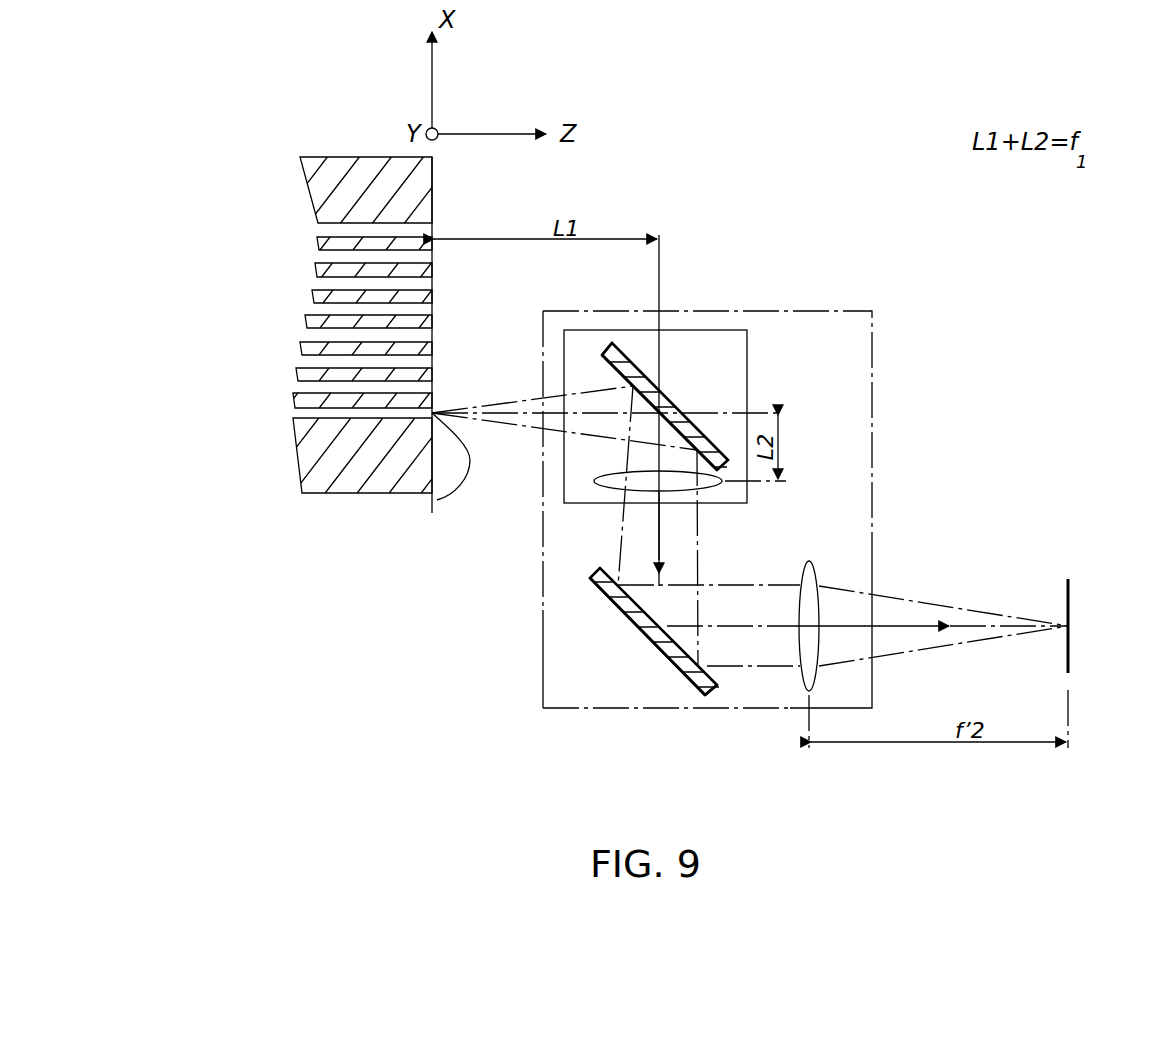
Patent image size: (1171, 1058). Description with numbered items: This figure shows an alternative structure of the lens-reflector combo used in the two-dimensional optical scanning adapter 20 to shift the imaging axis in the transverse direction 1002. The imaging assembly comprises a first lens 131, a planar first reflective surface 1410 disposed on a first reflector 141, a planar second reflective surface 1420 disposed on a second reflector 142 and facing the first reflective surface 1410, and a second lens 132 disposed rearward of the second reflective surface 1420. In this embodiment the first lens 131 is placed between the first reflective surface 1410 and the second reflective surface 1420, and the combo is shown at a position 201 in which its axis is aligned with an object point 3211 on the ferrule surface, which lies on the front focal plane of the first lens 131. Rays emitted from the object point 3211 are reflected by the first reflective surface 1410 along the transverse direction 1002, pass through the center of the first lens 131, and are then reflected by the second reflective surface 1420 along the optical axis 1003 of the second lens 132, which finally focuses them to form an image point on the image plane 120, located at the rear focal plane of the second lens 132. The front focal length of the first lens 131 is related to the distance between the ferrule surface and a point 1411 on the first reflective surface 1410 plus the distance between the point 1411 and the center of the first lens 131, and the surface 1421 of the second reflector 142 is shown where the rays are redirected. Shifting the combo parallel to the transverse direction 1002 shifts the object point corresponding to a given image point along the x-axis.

The object point 3211 is at (437, 500).
The optical scanning adapter 20 is at (543, 667).
The first position of lens-reflector combo 201 is at (718, 331).
The first reflector 141 is at (640, 383).
The first reflective surface 1410 is at (602, 356).
The point 1411 is at (657, 413).
The first lens 131 is at (630, 492).
The second reflector 142 is at (647, 614).
The second reflective surface 1420 is at (717, 675).
The reflecting surface of second mirror 1421 is at (663, 643).
The transverse direction 1002 is at (660, 527).
The second lens 132 is at (819, 578).
The optical axis of the second lens 1003 is at (905, 623).
The image plane 120 is at (1068, 610).